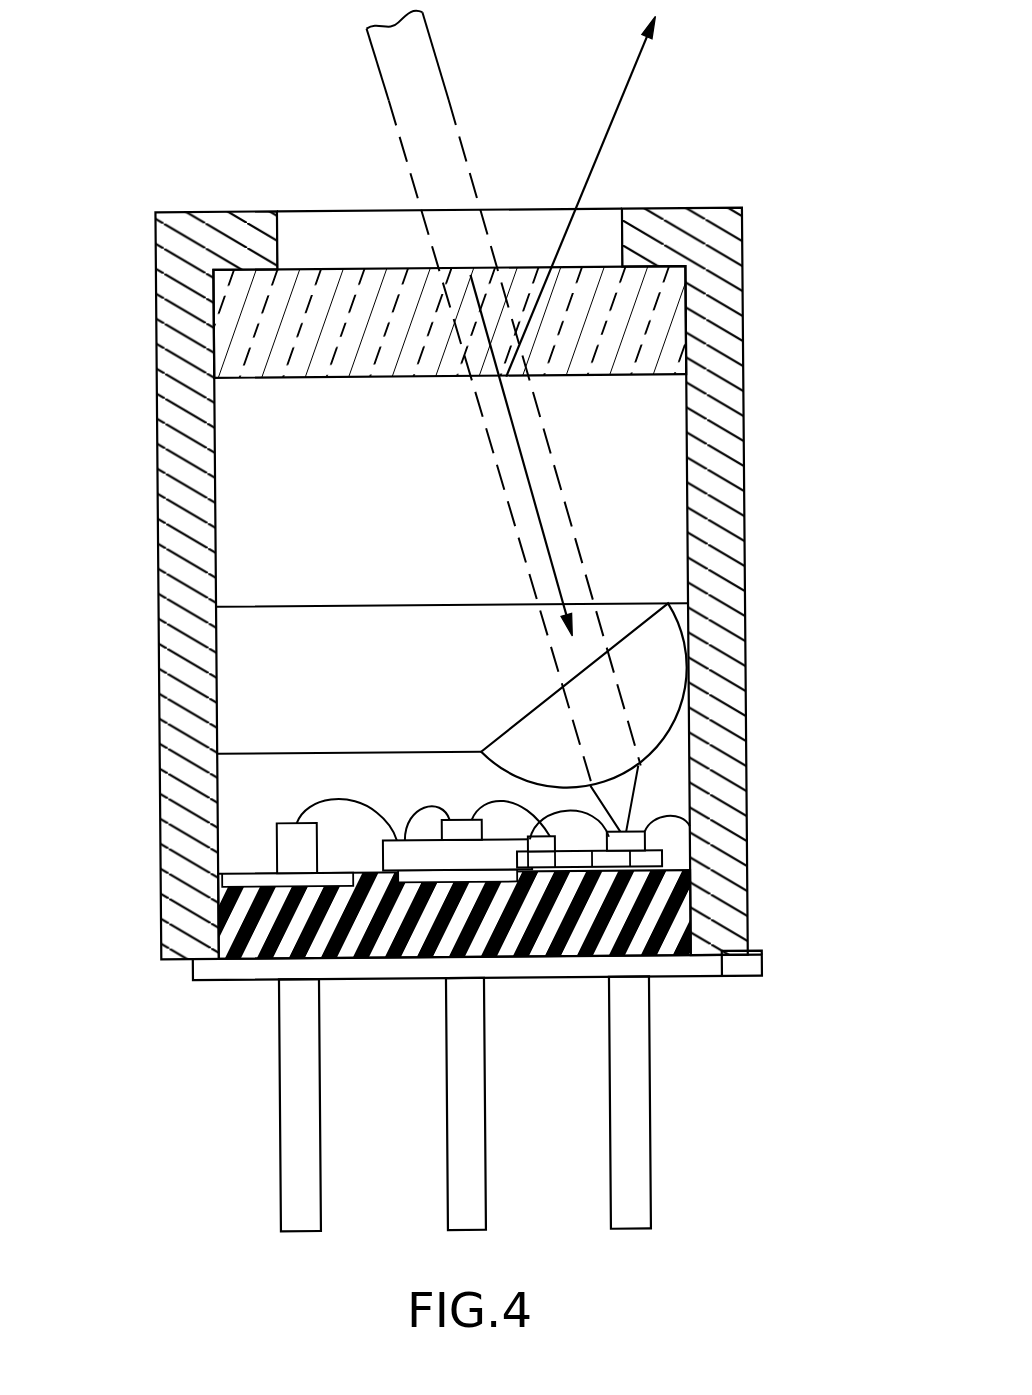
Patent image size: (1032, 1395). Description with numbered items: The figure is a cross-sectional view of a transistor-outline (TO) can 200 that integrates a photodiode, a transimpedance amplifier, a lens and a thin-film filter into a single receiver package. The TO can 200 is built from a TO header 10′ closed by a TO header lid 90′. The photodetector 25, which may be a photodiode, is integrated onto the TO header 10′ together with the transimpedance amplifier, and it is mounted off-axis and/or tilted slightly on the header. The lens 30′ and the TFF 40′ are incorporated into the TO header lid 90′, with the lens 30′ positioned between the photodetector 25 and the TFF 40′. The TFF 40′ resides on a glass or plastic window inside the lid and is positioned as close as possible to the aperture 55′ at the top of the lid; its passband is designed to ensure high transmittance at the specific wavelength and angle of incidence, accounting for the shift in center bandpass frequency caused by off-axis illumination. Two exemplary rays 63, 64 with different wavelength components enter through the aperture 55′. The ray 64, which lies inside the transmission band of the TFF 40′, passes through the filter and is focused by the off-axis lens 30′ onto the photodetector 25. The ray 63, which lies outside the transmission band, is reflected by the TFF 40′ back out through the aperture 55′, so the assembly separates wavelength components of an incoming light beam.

The TO can 200 is at (453, 620).
The TO header lid 90′ is at (187, 343).
The aperture 55′ is at (578, 235).
The TFF 40′ is at (632, 300).
The ray 64 is at (525, 490).
The ray 63 is at (638, 73).
The lens 30′ is at (640, 663).
The photodetector 25 is at (698, 822).
The TO header 10′ is at (267, 925).